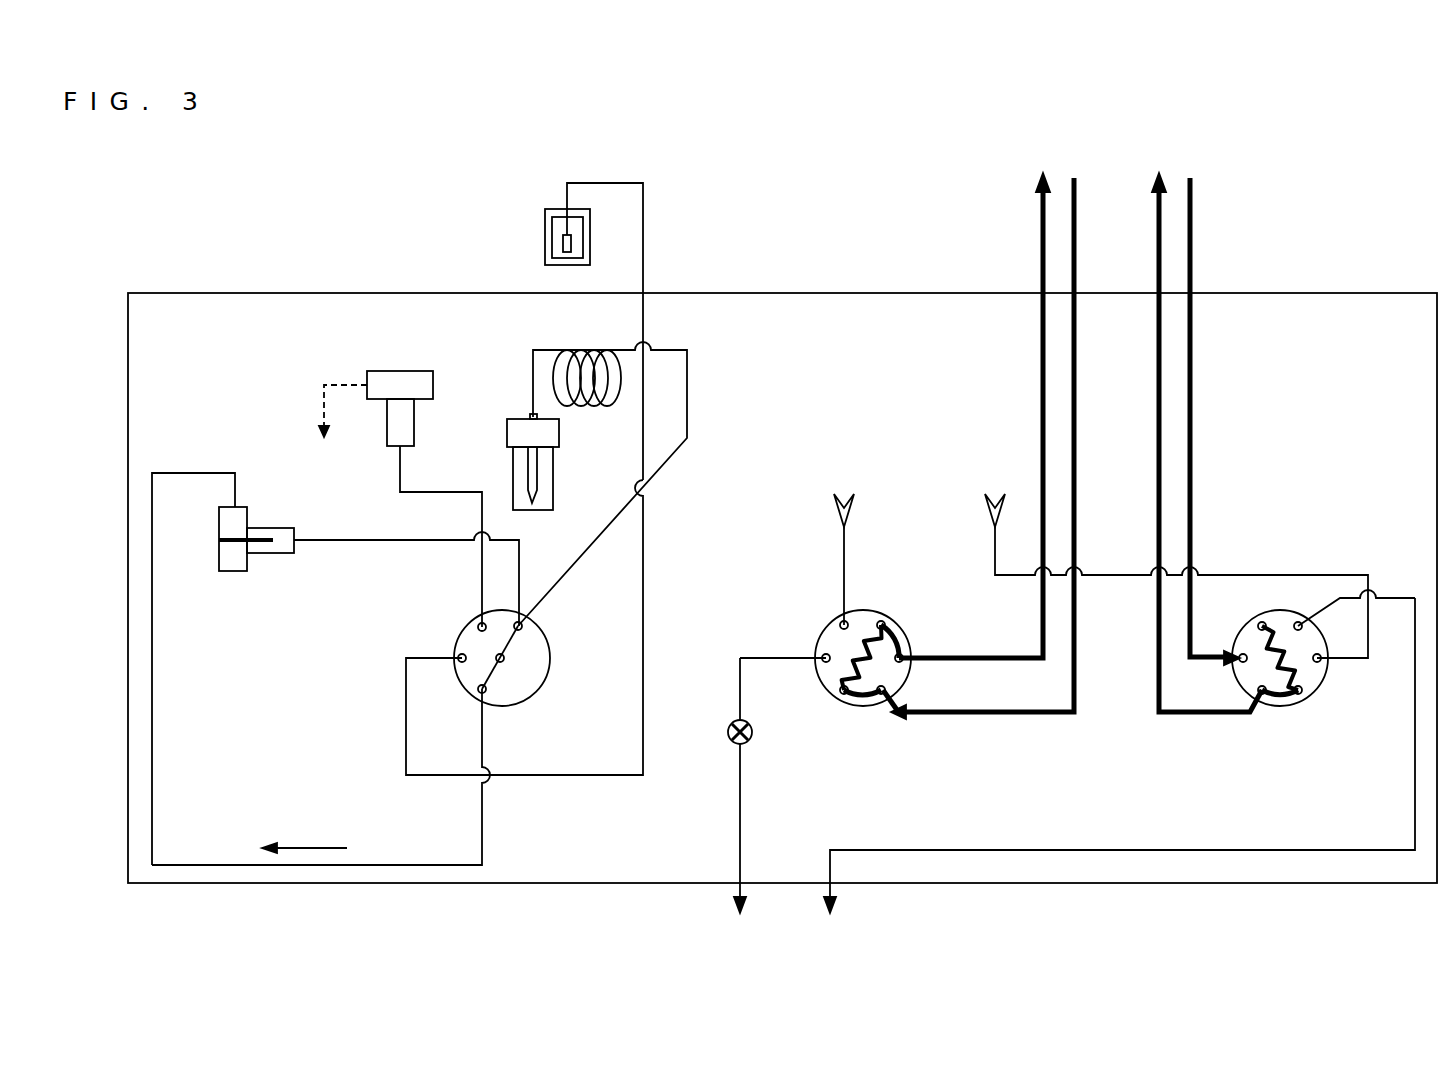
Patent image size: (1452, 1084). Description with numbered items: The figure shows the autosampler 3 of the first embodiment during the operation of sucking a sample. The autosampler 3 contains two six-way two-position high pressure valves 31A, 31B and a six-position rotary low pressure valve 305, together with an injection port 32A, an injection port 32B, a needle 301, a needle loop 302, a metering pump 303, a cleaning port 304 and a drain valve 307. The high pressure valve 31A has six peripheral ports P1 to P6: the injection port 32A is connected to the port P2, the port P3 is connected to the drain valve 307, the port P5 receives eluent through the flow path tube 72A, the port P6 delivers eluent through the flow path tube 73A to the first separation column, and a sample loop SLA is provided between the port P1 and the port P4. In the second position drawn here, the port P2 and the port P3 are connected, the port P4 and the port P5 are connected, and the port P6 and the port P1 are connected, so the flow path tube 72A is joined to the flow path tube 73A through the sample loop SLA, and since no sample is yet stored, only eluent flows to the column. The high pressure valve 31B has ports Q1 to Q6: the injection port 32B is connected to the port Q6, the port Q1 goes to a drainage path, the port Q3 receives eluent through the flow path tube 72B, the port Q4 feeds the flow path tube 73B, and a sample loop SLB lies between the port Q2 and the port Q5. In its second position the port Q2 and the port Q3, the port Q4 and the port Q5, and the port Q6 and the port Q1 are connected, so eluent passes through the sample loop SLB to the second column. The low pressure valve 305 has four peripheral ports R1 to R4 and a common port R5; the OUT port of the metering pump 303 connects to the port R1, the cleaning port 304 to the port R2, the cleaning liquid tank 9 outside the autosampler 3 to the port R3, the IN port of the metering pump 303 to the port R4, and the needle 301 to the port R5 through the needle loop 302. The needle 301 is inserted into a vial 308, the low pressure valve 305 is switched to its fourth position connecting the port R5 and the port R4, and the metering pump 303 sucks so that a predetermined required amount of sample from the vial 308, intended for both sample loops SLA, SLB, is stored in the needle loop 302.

The autosampler 3 is at (1305, 293).
The cleaning liquid tank 9 is at (545, 233).
The needle 301 is at (527, 470).
The needle loop 302 is at (570, 403).
The metering pump 303 is at (270, 555).
The cleaning port 304 is at (386, 408).
The low pressure valve 305 is at (510, 657).
The drain valve 307 is at (727, 737).
The vial 308 is at (555, 463).
The high pressure valve 31A is at (858, 664).
The high pressure valve 31B is at (1301, 649).
The injection port 32A is at (858, 510).
The injection port 32B is at (980, 510).
The flow path tube 72A is at (1076, 263).
The flow path tube 72B is at (1192, 258).
The flow path tube 73A is at (1040, 205).
The flow path tube 73B is at (1155, 208).
The port P1 is at (884, 622).
The port P2 is at (841, 622).
The port P3 is at (822, 656).
The port P4 is at (841, 692).
The port P5 is at (879, 694).
The port P6 is at (903, 661).
The port Q1 is at (1302, 620).
The port Q2 is at (1260, 623).
The port Q3 is at (1241, 654).
The port Q4 is at (1259, 688).
The port Q5 is at (1300, 694).
The port Q6 is at (1321, 661).
The port R1 is at (530, 614).
The port R2 is at (478, 627).
The port R3 is at (460, 665).
The port R4 is at (486, 693).
The common port R5 is at (504, 661).
The sample loop SLA is at (870, 665).
The sample loop SLB is at (1287, 657).